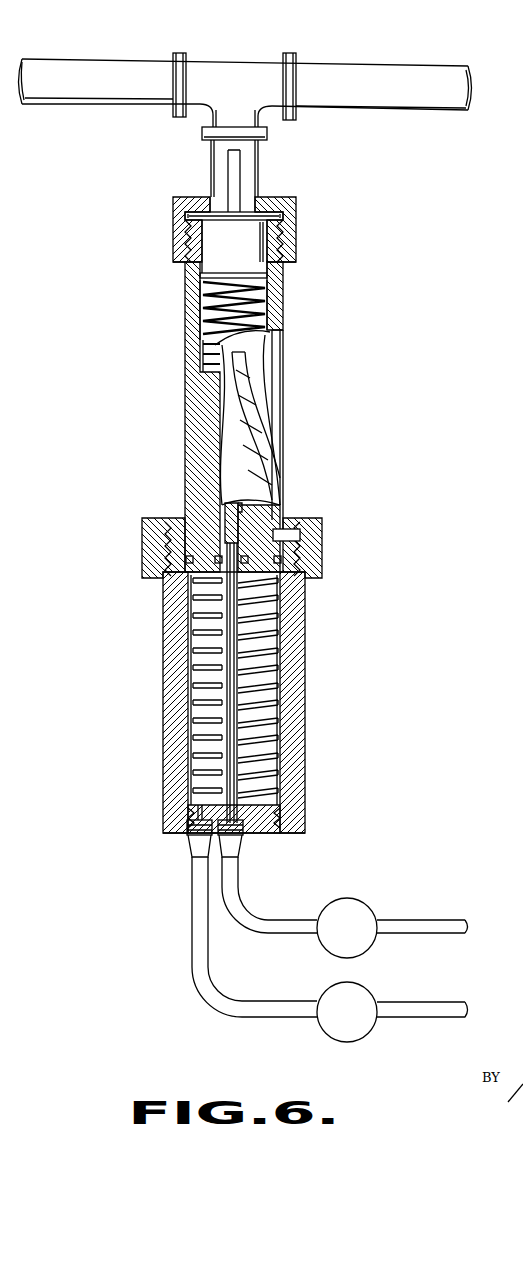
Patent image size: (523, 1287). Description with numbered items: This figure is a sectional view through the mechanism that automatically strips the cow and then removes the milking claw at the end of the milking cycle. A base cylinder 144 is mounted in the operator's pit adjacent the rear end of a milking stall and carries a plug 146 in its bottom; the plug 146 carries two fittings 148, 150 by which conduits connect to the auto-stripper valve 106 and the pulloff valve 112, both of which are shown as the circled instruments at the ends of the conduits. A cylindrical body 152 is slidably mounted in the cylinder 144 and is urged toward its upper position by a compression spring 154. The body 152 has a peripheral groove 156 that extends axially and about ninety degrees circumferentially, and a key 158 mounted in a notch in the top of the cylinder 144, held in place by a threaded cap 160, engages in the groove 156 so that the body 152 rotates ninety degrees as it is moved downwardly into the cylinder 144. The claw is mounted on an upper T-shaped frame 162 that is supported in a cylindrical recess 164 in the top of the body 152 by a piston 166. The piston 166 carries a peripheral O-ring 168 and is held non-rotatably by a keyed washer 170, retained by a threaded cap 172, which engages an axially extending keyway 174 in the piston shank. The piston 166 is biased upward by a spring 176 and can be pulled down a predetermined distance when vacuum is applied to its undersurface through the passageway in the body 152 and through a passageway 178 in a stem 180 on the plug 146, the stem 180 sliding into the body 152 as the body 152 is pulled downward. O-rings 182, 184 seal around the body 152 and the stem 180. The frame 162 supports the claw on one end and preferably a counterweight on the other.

The auto-stripper valve 106 is at (357, 907).
The pulloff valve 112 is at (357, 1028).
The base cylinder 144 is at (297, 700).
The plug 146 is at (277, 825).
The fitting 148 is at (240, 838).
The fitting 150 is at (192, 830).
The cylindrical body 152 is at (190, 397).
The compression spring 154 is at (190, 620).
The peripheral groove 156 is at (252, 417).
The key 158 is at (292, 535).
The threaded cap 160 is at (318, 548).
The T-shaped frame 162 is at (250, 62).
The cylindrical recess 164 is at (263, 318).
The piston 166 is at (253, 247).
The O-ring 168 is at (204, 275).
The keyed washer 170 is at (248, 212).
The threaded cap 172 is at (297, 222).
The keyway 174 is at (237, 176).
The spring 176 is at (205, 318).
The passageway 178 is at (230, 655).
The stem 180 is at (222, 728).
The O-ring 182 is at (188, 557).
The O-ring 184 is at (187, 580).